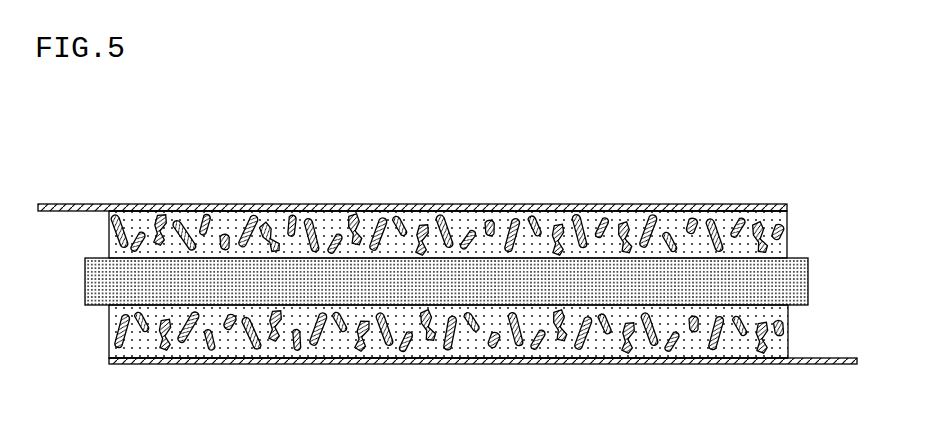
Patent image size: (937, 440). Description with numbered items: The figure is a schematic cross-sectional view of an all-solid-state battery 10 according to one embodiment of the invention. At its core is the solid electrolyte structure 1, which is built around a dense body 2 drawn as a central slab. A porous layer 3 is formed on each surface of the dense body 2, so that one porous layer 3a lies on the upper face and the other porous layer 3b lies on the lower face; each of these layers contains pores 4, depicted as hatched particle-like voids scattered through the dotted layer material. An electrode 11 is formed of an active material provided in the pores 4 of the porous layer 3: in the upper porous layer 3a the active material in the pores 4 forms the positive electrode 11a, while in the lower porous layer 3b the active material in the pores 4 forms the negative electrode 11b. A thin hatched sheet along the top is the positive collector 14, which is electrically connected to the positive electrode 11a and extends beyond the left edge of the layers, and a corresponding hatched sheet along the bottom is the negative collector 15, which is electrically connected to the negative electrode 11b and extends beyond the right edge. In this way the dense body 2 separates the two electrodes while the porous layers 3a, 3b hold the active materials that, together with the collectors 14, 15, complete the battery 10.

The all-solid-state battery 10 is at (590, 154).
The solid electrolyte structure 1 is at (885, 208).
The dense body 2 is at (796, 278).
The porous layer 3 is at (492, 283).
The porous layer 3a is at (782, 223).
The porous layer 3b is at (785, 327).
The pores 4 is at (718, 208).
The electrode 11 is at (448, 288).
The positive electrode 11a is at (358, 213).
The negative electrode 11b is at (383, 350).
The positive collector 14 is at (89, 204).
The negative collector 15 is at (792, 364).